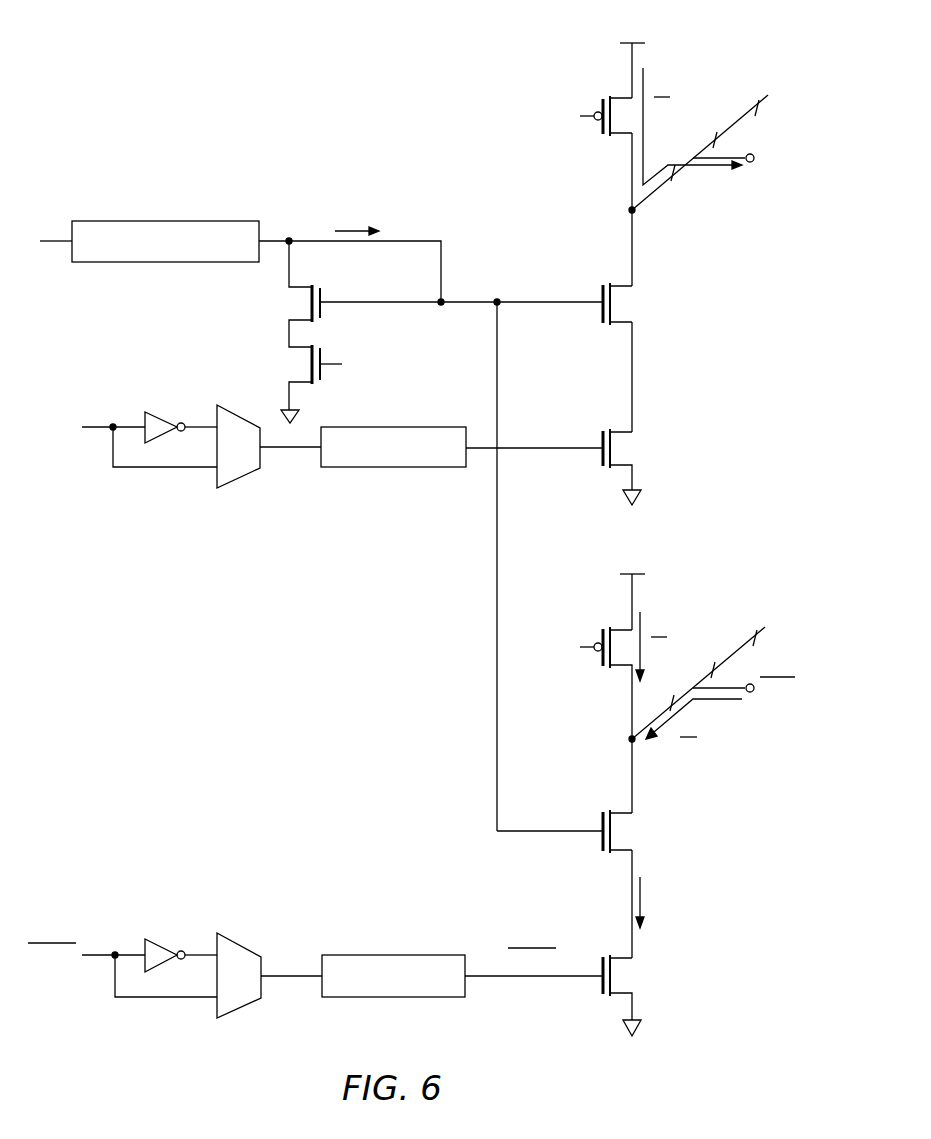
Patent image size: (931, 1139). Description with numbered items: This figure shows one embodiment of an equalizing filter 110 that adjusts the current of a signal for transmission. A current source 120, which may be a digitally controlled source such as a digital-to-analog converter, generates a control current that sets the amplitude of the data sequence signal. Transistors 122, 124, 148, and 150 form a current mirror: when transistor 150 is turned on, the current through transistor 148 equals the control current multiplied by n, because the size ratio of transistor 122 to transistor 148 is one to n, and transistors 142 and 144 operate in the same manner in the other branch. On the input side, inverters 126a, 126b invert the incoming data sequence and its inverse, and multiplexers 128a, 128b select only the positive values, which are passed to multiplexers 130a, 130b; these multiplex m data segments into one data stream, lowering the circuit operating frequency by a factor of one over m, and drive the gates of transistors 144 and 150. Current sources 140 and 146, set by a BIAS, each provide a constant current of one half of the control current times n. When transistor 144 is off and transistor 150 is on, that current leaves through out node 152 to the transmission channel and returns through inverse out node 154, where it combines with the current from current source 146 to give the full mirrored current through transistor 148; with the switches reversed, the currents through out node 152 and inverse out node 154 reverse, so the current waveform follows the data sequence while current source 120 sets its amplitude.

The equalizing filter 110 is at (355, 114).
The current source 120 is at (160, 221).
The transistor 122 is at (321, 295).
The transistor 124 is at (321, 353).
The inverter 126a is at (160, 413).
The inverter 126b is at (160, 940).
The multiplexer 128a is at (238, 486).
The multiplexer 128b is at (240, 1012).
The multiplexer 130a is at (392, 468).
The multiplexer 130b is at (393, 998).
The current source 140 is at (603, 103).
The transistor 142 is at (601, 297).
The transistor 144 is at (600, 457).
The current source 146 is at (603, 634).
The transistor 148 is at (601, 843).
The transistor 150 is at (600, 989).
The out node 152 is at (800, 161).
The inverse out node 154 is at (798, 691).